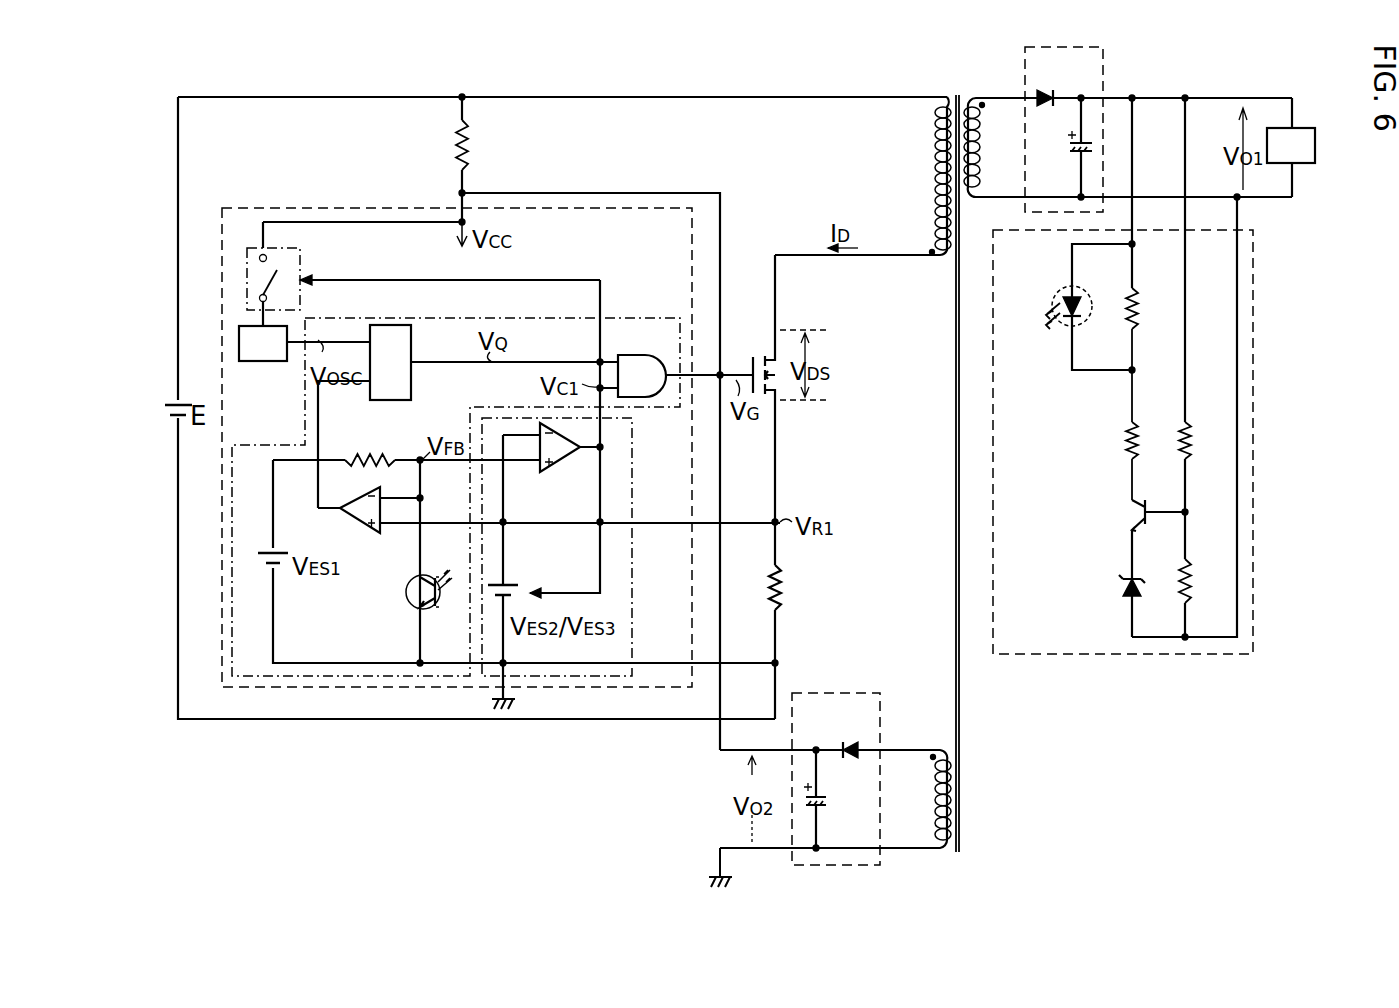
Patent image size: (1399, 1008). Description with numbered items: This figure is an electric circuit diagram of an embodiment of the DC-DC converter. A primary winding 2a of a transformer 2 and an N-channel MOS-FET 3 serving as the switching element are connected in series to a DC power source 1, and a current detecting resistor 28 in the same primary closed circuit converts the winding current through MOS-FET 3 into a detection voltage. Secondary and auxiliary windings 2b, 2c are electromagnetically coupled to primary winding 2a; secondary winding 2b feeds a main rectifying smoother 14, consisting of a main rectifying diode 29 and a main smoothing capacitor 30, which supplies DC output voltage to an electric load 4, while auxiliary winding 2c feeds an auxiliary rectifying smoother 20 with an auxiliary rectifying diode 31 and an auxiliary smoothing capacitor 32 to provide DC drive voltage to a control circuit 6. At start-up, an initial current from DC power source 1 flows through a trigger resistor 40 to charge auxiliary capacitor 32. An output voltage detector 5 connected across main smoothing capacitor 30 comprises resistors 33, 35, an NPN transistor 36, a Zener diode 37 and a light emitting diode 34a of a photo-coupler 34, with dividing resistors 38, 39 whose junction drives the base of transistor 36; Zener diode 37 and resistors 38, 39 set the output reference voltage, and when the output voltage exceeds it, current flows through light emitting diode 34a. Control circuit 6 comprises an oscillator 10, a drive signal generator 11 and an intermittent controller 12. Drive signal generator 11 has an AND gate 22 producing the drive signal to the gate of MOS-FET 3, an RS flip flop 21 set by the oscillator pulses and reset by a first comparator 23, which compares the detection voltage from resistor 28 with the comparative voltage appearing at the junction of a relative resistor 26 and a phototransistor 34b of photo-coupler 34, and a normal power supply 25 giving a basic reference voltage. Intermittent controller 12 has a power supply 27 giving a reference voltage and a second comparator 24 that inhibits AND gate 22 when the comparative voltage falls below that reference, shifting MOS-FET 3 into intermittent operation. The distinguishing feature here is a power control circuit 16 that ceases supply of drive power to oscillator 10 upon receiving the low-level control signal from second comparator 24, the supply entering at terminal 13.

The DC power source 1 is at (178, 403).
The transformer 2 is at (947, 86).
The primary winding 2a is at (934, 155).
The secondary winding 2b is at (982, 156).
The auxiliary winding 2c is at (936, 852).
The N-channel MOS-FET 3 is at (748, 352).
The electric load 4 is at (1291, 147).
The output voltage detector 5 is at (1253, 438).
The control circuit 6 is at (316, 217).
The oscillator 10 is at (266, 362).
The drive signal generator 11 is at (650, 318).
The intermittent controller 12 is at (632, 470).
The Vcc terminal 13 is at (457, 232).
The main rectifying smoother 14 is at (1104, 80).
The power control circuit 16 is at (305, 262).
The auxiliary rectifying smoother 20 is at (884, 700).
The RS flip flop 21 is at (415, 352).
The AND gate 22 is at (632, 358).
The first comparator 23 is at (370, 535).
The second comparator 24 is at (565, 470).
The normal power supply 25 is at (260, 546).
The relative resistor 26 is at (348, 462).
The power supply 27 is at (520, 590).
The current detecting resistor 28 is at (769, 583).
The main rectifying diode 29 is at (1050, 90).
The main smoothing capacitor 30 is at (1068, 150).
The auxiliary rectifying diode 31 is at (850, 742).
The auxiliary smoothing capacitor 32 is at (828, 800).
The resistor 33 is at (1128, 285).
The photo-coupler 34 is at (1051, 333).
The light emitting diode 34a is at (1055, 278).
The phototransistor 34b is at (406, 600).
The resistor 35 is at (1126, 429).
The NPN transistor 36 is at (1132, 507).
The Zener diode 37 is at (1124, 576).
The dividing resistor 38 is at (1179, 430).
The dividing resistor 39 is at (1180, 564).
The trigger resistor 40 is at (456, 140).